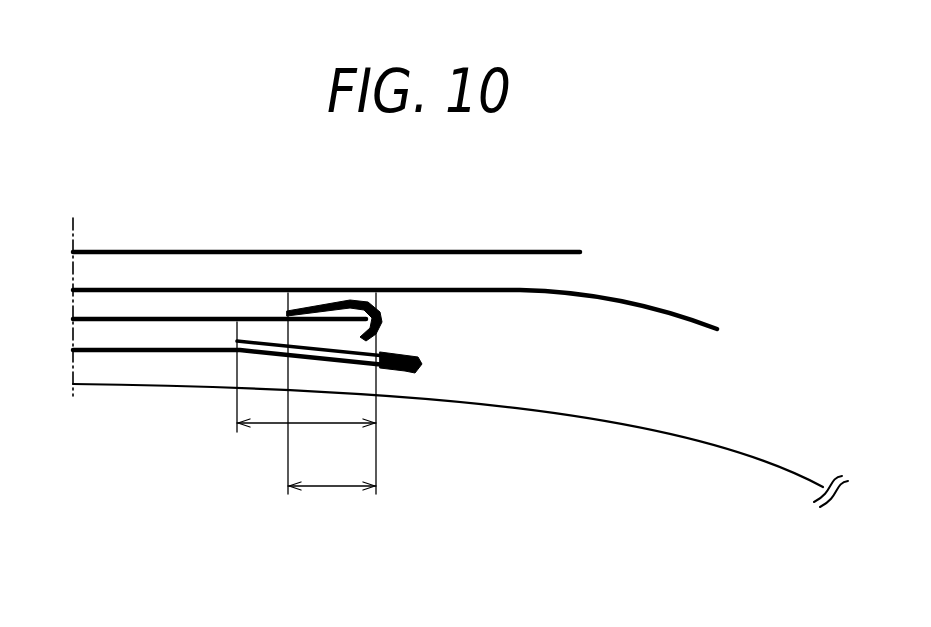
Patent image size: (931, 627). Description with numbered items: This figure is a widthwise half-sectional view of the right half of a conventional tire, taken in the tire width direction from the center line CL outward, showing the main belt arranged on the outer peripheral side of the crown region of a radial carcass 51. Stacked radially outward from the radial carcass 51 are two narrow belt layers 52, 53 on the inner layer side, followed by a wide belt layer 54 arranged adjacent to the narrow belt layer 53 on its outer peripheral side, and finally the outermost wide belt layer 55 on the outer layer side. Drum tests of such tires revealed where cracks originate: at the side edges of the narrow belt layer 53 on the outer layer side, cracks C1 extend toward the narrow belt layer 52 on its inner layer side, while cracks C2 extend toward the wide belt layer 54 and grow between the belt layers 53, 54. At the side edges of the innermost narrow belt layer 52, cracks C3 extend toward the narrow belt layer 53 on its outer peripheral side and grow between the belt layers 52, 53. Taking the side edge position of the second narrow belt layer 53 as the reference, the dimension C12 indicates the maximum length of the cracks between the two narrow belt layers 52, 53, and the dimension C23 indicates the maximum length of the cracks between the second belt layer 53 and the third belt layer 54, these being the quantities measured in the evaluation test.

The radial carcass 51 is at (525, 403).
The narrow belt layer 52 is at (207, 352).
The narrow belt layer 53 is at (147, 322).
The wide belt layer 54 is at (507, 293).
The outermost wide belt layer 55 is at (211, 251).
The cracks C1 is at (365, 340).
The cracks C2 is at (358, 305).
The cracks C3 is at (317, 338).
The maximum length of the cracks between the narrow belt layers C12 is at (306, 437).
The maximum length of the cracks between the second and third belt layers C23 is at (332, 502).
The center line CL is at (72, 291).